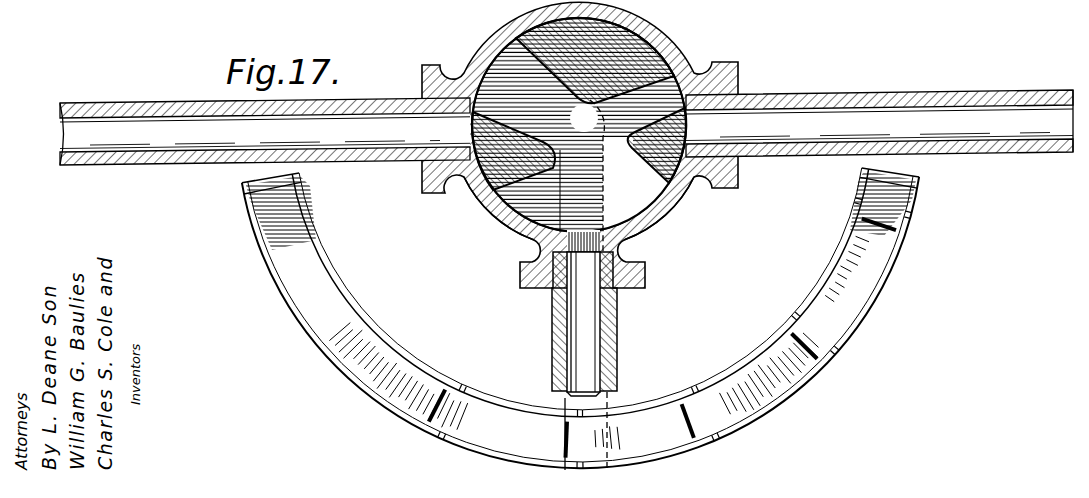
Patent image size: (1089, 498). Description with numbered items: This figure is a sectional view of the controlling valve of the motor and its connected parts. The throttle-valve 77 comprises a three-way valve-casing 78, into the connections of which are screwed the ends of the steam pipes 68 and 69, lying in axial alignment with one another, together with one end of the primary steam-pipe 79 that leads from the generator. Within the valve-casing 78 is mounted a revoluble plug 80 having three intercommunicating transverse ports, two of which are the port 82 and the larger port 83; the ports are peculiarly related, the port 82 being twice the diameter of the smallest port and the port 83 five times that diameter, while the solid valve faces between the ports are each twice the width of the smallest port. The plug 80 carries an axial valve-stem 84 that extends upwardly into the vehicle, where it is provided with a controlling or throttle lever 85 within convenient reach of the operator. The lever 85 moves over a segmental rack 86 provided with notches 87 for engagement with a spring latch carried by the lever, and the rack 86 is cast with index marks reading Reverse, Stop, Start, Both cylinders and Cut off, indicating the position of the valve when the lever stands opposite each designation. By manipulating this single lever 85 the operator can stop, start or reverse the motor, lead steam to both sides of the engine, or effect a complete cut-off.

The pipe 68 is at (836, 76).
The pipe 69 is at (144, 97).
The throttle-valve 77 is at (666, 222).
The three-way valve-casing 78 is at (672, 46).
The primary steam-pipe 79 is at (604, 313).
The revoluble plug 80 is at (497, 217).
The port 82 is at (579, 125).
The port 83 is at (629, 176).
The axial valve-stem 84 is at (601, 100).
The controlling or throttle lever 85 is at (574, 403).
The segmental rack 86 is at (358, 296).
The notches 87 is at (443, 440).